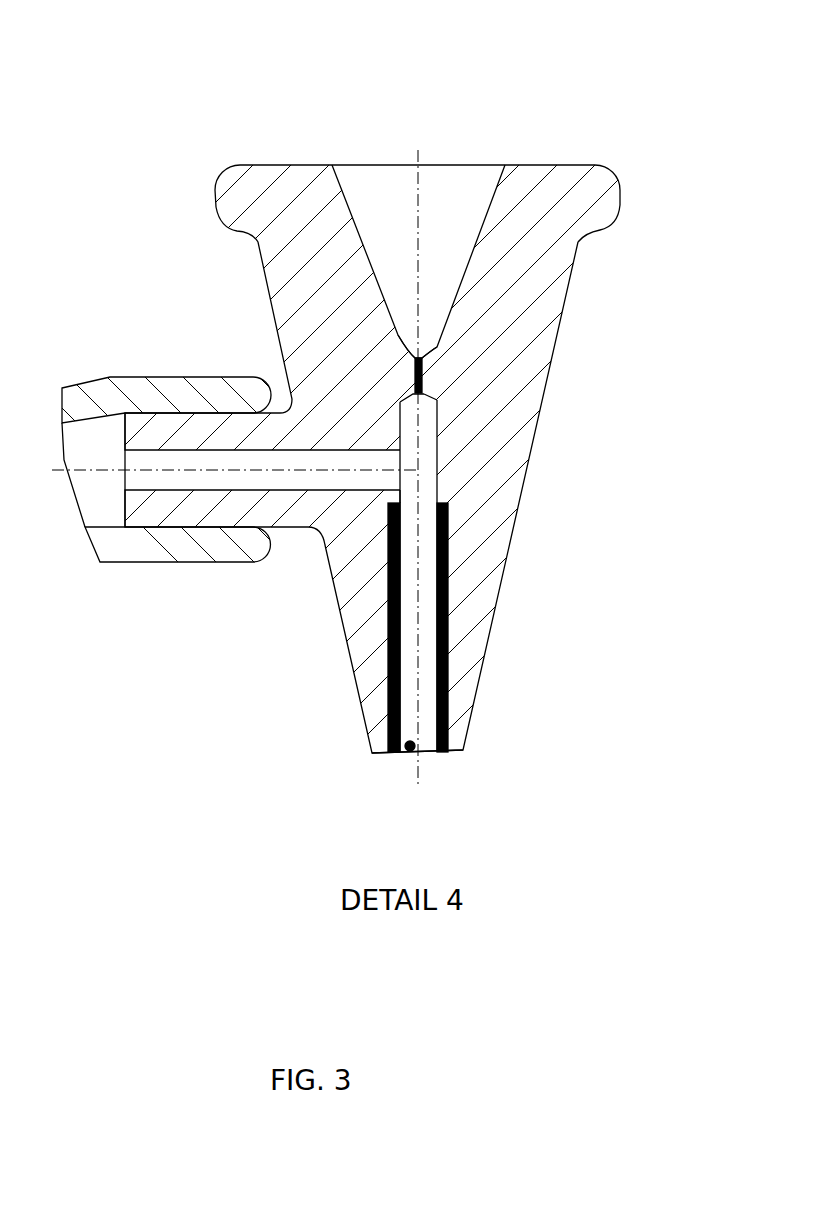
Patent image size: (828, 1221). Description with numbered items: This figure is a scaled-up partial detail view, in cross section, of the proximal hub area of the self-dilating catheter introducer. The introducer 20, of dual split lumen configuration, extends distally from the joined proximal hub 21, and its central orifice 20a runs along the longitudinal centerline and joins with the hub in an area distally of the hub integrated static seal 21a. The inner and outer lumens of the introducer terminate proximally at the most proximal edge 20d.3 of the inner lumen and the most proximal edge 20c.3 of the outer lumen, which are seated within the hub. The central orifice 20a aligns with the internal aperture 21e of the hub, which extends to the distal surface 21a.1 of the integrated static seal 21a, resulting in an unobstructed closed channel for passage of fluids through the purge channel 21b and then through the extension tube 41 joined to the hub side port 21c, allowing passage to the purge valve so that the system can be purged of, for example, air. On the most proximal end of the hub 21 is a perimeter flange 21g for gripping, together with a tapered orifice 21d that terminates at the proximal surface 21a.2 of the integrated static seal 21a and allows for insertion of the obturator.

The introducer 20 is at (466, 742).
The central orifice 20a is at (410, 752).
The most proximal edge of outer lumen 20c.3 is at (443, 505).
The most proximal edge of inner lumen 20d.3 is at (396, 502).
The proximal hub 21 is at (540, 165).
The integrated static seal 21a is at (423, 386).
The distal surface of integrated static seal 21a.1 is at (440, 408).
The proximal surface of integrated static seal 21a.2 is at (418, 358).
The purge channel 21b is at (150, 412).
The hub side port 21c is at (297, 530).
The tapered orifice 21d is at (477, 223).
The internal aperture 21e is at (440, 475).
The perimeter flange 21g is at (622, 203).
The extension tube 41 is at (203, 565).